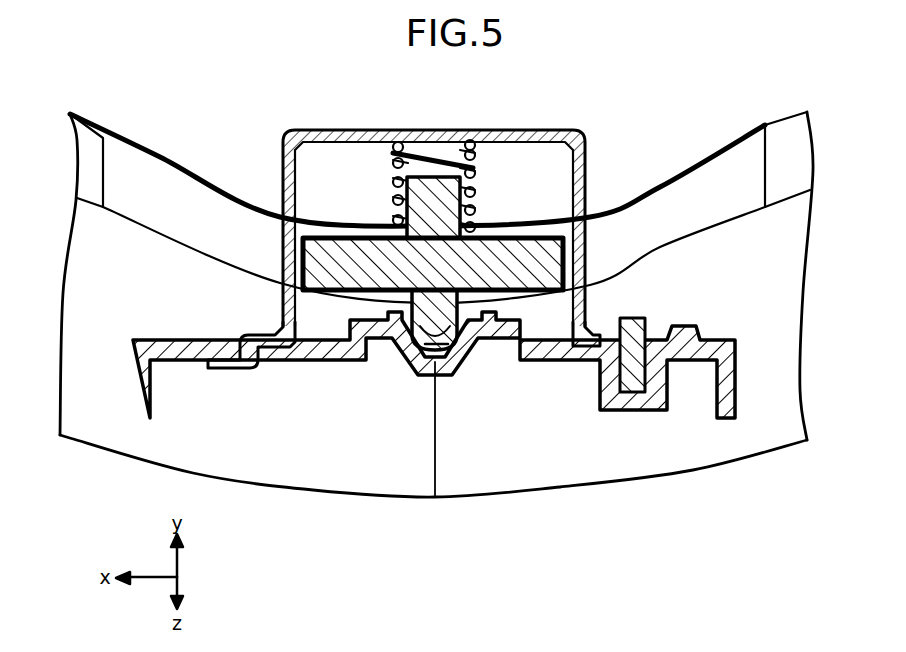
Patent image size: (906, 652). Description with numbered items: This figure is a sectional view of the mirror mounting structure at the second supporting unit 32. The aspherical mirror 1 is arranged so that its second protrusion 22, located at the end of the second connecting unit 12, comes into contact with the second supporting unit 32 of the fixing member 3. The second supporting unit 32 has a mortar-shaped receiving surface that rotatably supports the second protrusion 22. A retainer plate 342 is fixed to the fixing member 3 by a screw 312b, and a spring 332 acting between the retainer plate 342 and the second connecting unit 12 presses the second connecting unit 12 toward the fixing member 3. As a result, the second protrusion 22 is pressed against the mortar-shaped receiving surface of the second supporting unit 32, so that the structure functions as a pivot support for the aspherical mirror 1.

The aspherical mirror 1 is at (757, 176).
The retainer plate 342 is at (317, 130).
The spring 332 is at (443, 140).
The second connecting unit 12 is at (430, 222).
The second protrusion 22 is at (455, 345).
The second supporting unit 32 is at (433, 363).
The fixing member 3 is at (737, 362).
The screw 312b is at (632, 382).